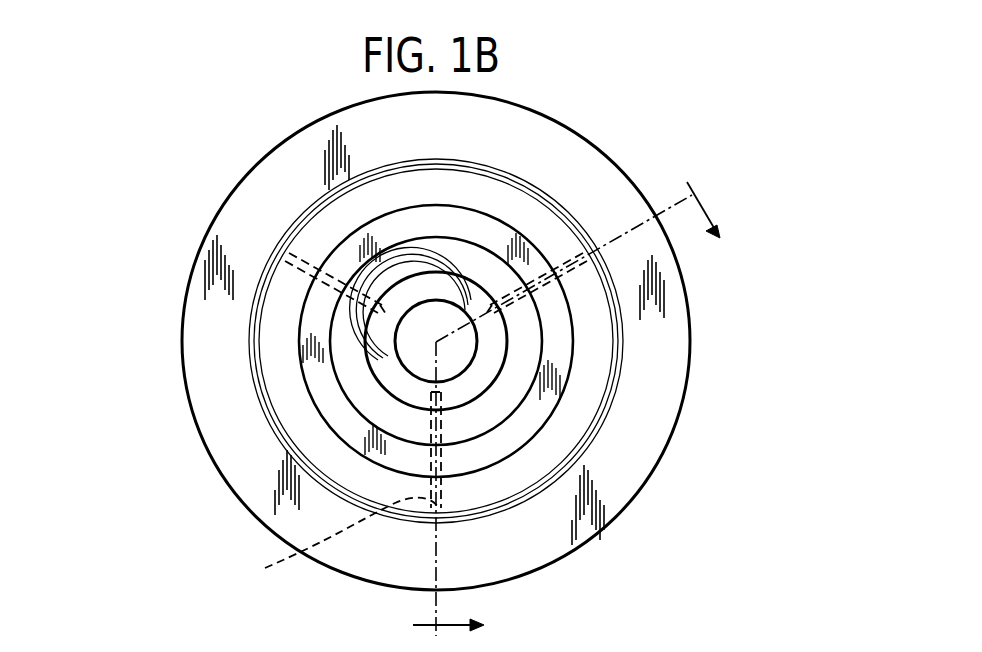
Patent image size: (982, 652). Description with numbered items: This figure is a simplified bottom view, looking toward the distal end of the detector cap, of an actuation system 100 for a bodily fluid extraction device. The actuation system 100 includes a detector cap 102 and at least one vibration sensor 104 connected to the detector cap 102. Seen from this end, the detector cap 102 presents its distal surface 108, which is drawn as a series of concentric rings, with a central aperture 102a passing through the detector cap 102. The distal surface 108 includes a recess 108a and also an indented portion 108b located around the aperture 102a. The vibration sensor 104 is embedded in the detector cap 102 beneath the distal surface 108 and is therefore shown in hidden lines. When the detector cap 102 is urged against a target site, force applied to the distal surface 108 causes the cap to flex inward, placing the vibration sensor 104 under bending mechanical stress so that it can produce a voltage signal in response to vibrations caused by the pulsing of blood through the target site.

The actuation system 100 is at (620, 113).
The detector cap 102 is at (624, 507).
The aperture 102a is at (457, 352).
The vibration sensor 104 is at (324, 544).
The distal surface 108 is at (345, 372).
The recess 108a is at (330, 410).
The indented portion 108b is at (433, 284).